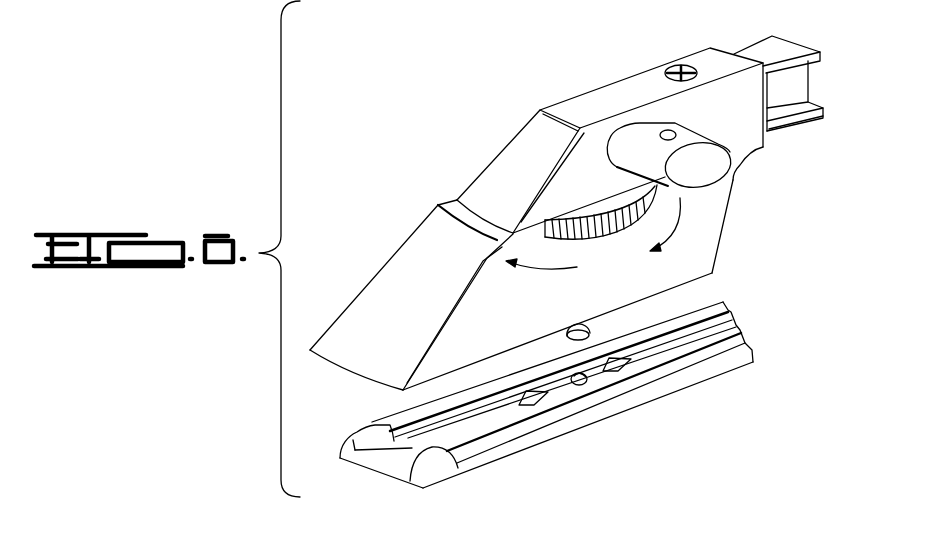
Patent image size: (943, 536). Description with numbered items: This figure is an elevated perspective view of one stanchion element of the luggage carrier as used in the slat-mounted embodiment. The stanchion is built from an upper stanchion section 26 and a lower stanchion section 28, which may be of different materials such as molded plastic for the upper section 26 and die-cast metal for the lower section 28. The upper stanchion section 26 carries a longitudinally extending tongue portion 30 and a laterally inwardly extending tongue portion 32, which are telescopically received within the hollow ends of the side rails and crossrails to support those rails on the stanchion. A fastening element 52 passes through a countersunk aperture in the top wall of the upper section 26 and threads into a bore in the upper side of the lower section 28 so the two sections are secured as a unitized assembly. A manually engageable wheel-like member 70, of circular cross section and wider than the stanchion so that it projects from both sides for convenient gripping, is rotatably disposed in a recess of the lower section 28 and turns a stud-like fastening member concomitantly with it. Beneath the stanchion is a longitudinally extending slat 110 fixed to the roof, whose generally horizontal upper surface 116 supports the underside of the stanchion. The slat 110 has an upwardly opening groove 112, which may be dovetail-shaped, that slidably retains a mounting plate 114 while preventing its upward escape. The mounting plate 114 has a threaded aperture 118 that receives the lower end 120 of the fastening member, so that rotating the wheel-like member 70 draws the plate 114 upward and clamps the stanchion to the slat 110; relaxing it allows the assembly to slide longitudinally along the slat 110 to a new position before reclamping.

The upper stanchion section 26 is at (575, 94).
The lower stanchion section 28 is at (401, 243).
The longitudinally extending tongue portion 30 is at (800, 88).
The laterally inwardly extending tongue portion 32 is at (712, 172).
The fastening element 52 is at (680, 66).
The wheel-like member 70 is at (604, 203).
The slat 110 is at (568, 389).
The groove 112 is at (494, 412).
The mounting plate 114 is at (614, 368).
The upper surface 116 is at (731, 338).
The threaded aperture 118 is at (581, 386).
The lower end 120 is at (577, 322).